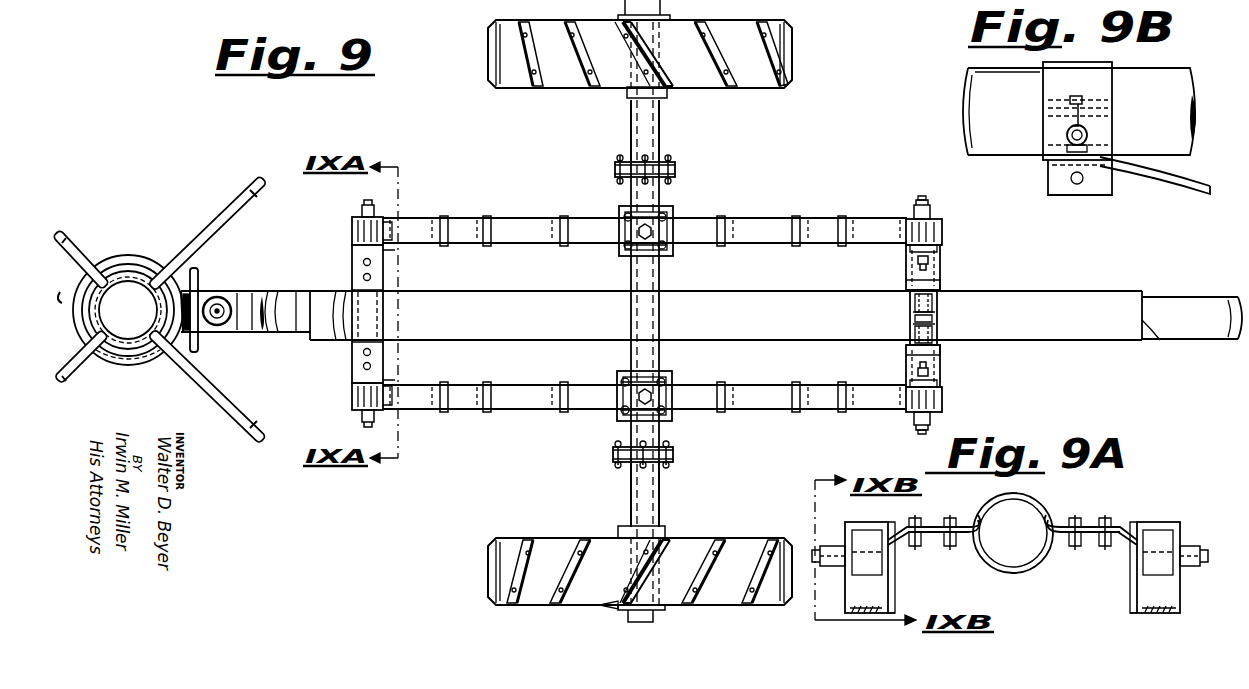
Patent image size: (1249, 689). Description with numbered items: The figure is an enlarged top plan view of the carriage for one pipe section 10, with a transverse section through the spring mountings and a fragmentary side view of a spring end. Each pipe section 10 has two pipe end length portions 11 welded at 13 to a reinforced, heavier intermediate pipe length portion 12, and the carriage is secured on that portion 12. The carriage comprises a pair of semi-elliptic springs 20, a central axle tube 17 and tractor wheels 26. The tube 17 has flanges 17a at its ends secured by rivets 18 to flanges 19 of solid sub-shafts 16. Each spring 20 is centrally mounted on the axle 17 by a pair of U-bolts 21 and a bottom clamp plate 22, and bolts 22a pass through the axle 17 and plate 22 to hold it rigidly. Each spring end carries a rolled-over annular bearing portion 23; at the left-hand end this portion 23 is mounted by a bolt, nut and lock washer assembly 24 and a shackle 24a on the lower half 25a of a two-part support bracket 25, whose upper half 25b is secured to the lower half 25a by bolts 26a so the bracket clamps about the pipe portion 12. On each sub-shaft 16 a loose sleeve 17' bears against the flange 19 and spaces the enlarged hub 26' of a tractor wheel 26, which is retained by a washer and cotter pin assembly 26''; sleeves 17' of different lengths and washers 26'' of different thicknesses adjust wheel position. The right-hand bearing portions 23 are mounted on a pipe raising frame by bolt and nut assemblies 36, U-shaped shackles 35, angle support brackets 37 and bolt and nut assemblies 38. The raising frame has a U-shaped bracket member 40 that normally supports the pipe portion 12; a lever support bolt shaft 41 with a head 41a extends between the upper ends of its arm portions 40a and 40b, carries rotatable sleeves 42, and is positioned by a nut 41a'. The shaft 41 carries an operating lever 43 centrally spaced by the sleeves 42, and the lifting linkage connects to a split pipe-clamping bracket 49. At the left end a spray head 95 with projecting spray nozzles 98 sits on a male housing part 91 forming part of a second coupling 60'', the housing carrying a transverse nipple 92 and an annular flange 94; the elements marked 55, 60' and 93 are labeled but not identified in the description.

In FIG. 9, the pipe section 10 is at (542, 290).
In FIG. 9A, the pipe section 10 is at (1024, 496).
In FIG. 9B, the pipe section 10 is at (1217, 58).
In FIG. 9, the pipe end length portion 11 is at (276, 294).
In FIG. 9, the intermediate pipe length portion 12 is at (340, 288).
In FIG. 9A, the intermediate pipe length portion 12 is at (1010, 570).
In FIG. 9B, the intermediate pipe length portion 12 is at (986, 72).
In FIG. 9, the weld 13 is at (300, 326).
In FIG. 9, the sub-shaft 16 is at (631, 136).
In FIG. 9, the axle tube 17 is at (618, 314).
In FIG. 9, the loose sleeve 17' is at (679, 313).
In FIG. 9, the flange 17a is at (678, 172).
In FIG. 9, the rivet 18 is at (672, 161).
In FIG. 9, the flange 19 is at (615, 171).
In FIG. 9, the semi-elliptic spring 20 is at (760, 224).
In FIG. 9A, the semi-elliptic spring 20 is at (852, 600).
In FIG. 9B, the semi-elliptic spring 20 is at (1176, 179).
In FIG. 9, the U-bolt 21 is at (650, 210).
In FIG. 9, the bottom clamp plate 22 is at (620, 212).
In FIG. 9, the bolt 22a is at (656, 233).
In FIG. 9, the annular bearing portion 23 is at (354, 231).
In FIG. 9A, the annular bearing portion 23 is at (873, 574).
In FIG. 9B, the annular bearing portion 23 is at (1092, 135).
In FIG. 9, the bolt, nut and lock washer assembly 24 is at (356, 207).
In FIG. 9A, the bolt, nut and lock washer assembly 24 is at (896, 570).
In FIG. 9B, the bolt, nut and lock washer assembly 24 is at (1065, 138).
In FIG. 9, the shackle 24a is at (388, 198).
In FIG. 9A, the shackle 24a is at (868, 530).
In FIG. 9B, the shackle 24a is at (1068, 190).
In FIG. 9, the support bracket 25 is at (452, 325).
In FIG. 9A, the support bracket 25 is at (1127, 505).
In FIG. 9A, the lower bracket half 25a is at (1090, 550).
In FIG. 9B, the lower bracket half 25a is at (1062, 118).
In FIG. 9, the upper bracket half 25b is at (418, 315).
In FIG. 9A, the upper bracket half 25b is at (942, 522).
In FIG. 9B, the upper bracket half 25b is at (1112, 86).
In FIG. 9, the tractor wheel 26 is at (547, 312).
In FIG. 9A, the tractor wheel 26 is at (997, 516).
In FIG. 9B, the tractor wheel 26 is at (1070, 96).
In FIG. 9, the hub 26' is at (642, 312).
In FIG. 9, the washer and cotter pin assembly 26'' is at (577, 614).
In FIG. 9, the bolt 26a is at (372, 276).
In FIG. 9, the U-shaped shackle 35 is at (944, 240).
In FIG. 9, the bolt and nut assembly 36 is at (936, 212).
In FIG. 9, the angle support bracket 37 is at (907, 263).
In FIG. 9, the bolt and nut assembly 38 is at (918, 204).
In FIG. 9, the U-shaped bracket member 40 is at (941, 286).
In FIG. 9, the arm portion 40a is at (910, 283).
In FIG. 9, the arm portion 40b is at (910, 352).
In FIG. 9, the lever support bolt shaft 41 is at (910, 306).
In FIG. 9, the head 41a is at (957, 265).
In FIG. 9, the nut 41a' is at (960, 359).
In FIG. 9, the sleeve 42 is at (941, 333).
In FIG. 9, the operating lever 43 is at (910, 318).
In FIG. 9, the pipe-clamping bracket 49 is at (912, 329).
In FIG. 9, the shaft collar 55 is at (214, 332).
In FIG. 9, the pin 60' is at (230, 297).
In FIG. 9, the second coupling 60'' is at (126, 373).
In FIG. 9, the male coupling housing part 91 is at (112, 262).
In FIG. 9, the nipple 92 is at (76, 292).
In FIG. 9, the cross pin 93 is at (198, 278).
In FIG. 9, the annular flange 94 is at (140, 266).
In FIG. 9, the spray head 95 is at (142, 352).
In FIG. 9, the spray nozzle 98 is at (222, 216).